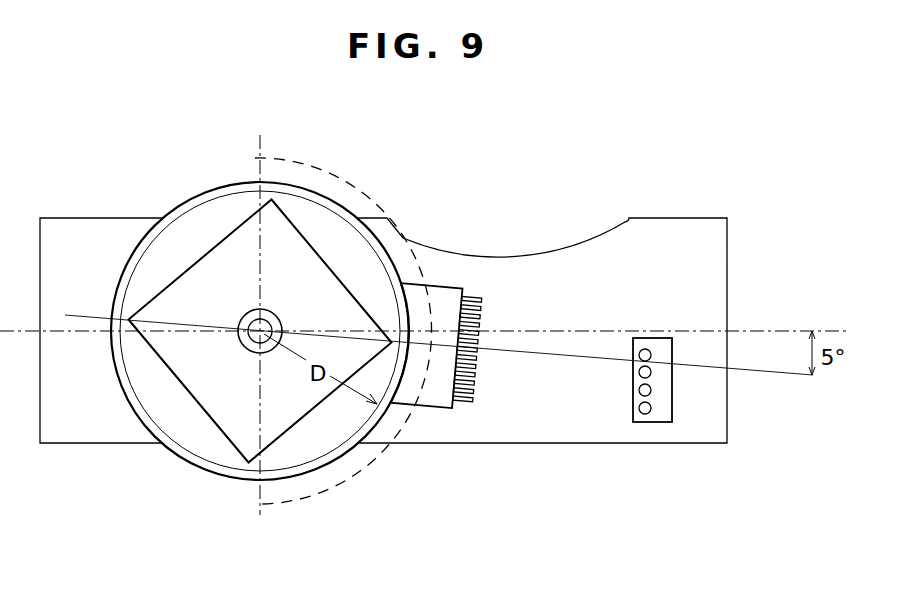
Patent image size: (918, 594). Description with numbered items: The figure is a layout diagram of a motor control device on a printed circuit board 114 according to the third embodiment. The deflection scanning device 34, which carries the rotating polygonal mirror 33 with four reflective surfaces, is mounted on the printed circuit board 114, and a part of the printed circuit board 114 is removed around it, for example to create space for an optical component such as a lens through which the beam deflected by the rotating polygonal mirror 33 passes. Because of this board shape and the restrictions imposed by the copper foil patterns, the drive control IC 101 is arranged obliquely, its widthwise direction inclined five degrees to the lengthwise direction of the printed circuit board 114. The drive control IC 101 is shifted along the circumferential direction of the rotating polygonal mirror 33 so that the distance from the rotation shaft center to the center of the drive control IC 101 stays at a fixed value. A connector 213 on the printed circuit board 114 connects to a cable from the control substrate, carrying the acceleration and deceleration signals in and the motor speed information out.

The rotating polygonal mirror 33 is at (192, 263).
The deflection scanning device 34 is at (172, 447).
The drive control IC 101 is at (427, 408).
The printed circuit board 114 is at (700, 218).
The connector 213 is at (653, 422).